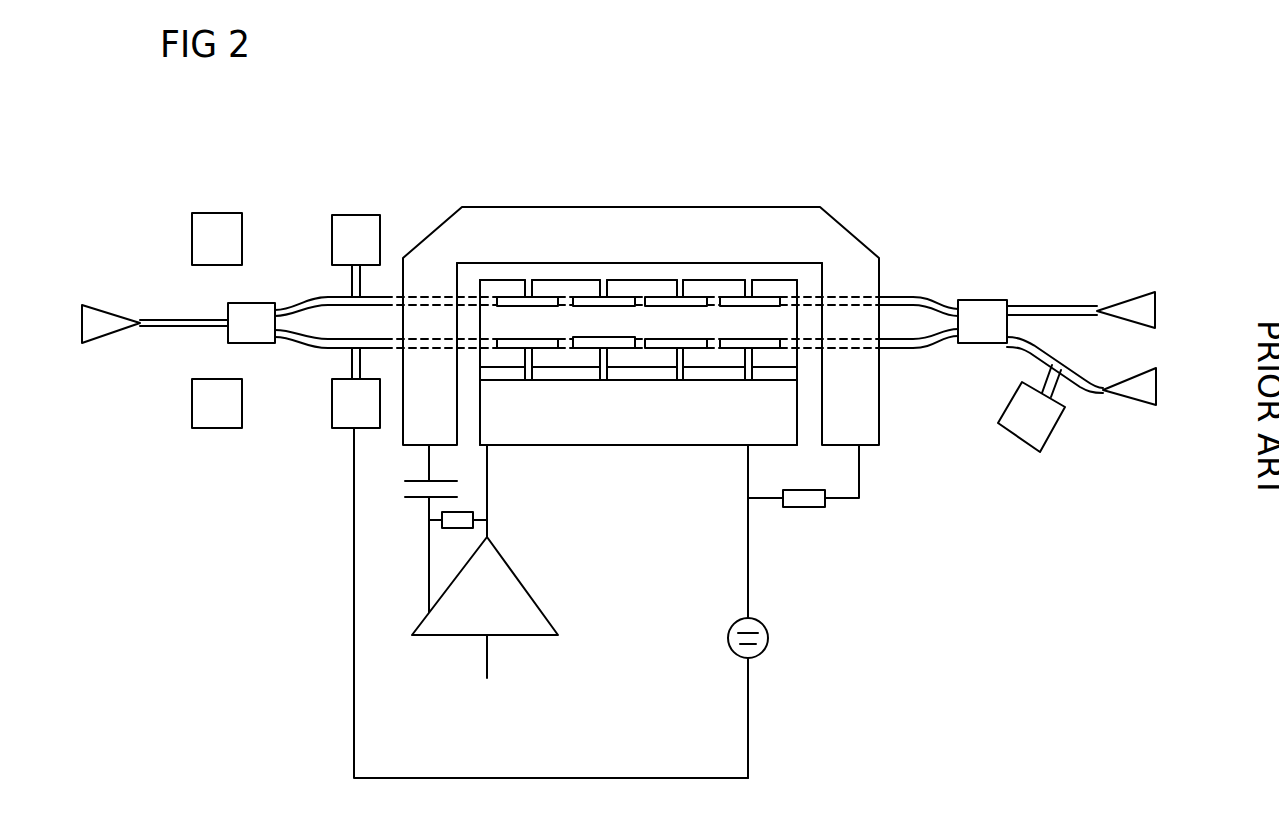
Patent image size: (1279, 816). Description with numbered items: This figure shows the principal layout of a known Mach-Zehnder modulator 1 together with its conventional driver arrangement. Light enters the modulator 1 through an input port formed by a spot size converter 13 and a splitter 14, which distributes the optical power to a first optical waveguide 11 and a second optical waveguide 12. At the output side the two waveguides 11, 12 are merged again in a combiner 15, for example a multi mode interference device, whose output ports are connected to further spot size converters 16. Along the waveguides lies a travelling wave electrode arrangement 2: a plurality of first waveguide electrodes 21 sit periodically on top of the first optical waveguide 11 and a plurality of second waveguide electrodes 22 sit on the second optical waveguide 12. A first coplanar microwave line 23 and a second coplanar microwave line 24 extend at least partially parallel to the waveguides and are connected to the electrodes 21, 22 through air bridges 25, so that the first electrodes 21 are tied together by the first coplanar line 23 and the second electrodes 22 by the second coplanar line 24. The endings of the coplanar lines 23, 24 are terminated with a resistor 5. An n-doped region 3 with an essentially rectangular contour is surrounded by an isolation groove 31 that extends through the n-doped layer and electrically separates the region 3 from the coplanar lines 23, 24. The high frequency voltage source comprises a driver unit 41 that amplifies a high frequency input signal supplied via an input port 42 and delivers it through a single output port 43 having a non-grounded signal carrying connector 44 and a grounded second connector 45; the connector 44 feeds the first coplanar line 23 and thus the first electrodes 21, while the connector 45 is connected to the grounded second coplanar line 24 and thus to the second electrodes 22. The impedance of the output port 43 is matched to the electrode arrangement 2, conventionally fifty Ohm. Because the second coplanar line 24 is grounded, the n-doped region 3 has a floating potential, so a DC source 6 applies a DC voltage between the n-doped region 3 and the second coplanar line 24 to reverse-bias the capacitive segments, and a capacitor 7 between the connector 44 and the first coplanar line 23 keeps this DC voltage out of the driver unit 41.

The Mach-Zehnder modulator 1 is at (864, 206).
The travelling wave electrode arrangement 2 is at (524, 184).
The n-doped region 3 is at (777, 290).
The resistor 5 is at (800, 500).
The DC source 6 is at (762, 630).
The capacitor 7 is at (405, 481).
The first optical waveguide 11 is at (897, 297).
The second optical waveguide 12 is at (900, 350).
The spot size converter 13 is at (94, 290).
The splitter 14 is at (247, 315).
The combiner 15 is at (987, 315).
The spot size converters 16 is at (1147, 388).
The first waveguide electrodes 21 is at (730, 290).
The second waveguide electrodes 22 is at (733, 345).
The first coplanar microwave line 23 is at (640, 230).
The second coplanar microwave line 24 is at (635, 425).
The air bridges 25 is at (748, 277).
The isolation groove 31 is at (490, 270).
The driver unit 41 is at (528, 612).
The input port 42 is at (490, 640).
The output port 43 is at (442, 554).
The signal carrying connector 44 is at (426, 612).
The grounded second connector 45 is at (488, 537).